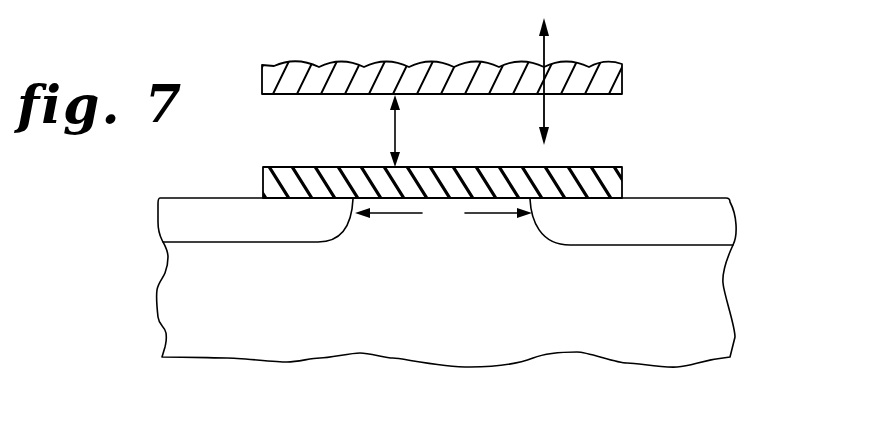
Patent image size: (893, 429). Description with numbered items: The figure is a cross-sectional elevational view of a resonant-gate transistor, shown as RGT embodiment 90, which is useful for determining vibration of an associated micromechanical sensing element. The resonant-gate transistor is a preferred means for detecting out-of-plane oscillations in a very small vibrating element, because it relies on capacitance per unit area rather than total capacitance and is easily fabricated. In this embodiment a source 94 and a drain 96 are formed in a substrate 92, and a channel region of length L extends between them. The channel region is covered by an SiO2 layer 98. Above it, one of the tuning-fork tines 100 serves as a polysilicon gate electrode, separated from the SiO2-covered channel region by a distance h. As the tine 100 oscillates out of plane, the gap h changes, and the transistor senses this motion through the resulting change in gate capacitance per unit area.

The RGT embodiment 90 is at (777, 91).
The substrate 92 is at (593, 318).
The source 94 is at (168, 220).
The drain 96 is at (695, 210).
The SiO2 cover 98 is at (263, 179).
The tuning-fork tine 100 is at (623, 76).